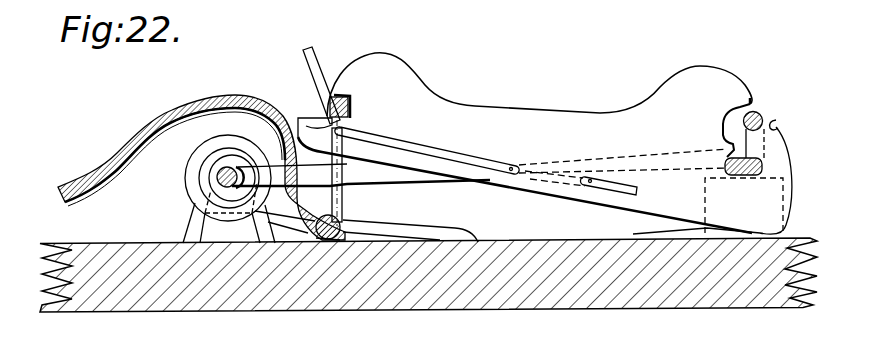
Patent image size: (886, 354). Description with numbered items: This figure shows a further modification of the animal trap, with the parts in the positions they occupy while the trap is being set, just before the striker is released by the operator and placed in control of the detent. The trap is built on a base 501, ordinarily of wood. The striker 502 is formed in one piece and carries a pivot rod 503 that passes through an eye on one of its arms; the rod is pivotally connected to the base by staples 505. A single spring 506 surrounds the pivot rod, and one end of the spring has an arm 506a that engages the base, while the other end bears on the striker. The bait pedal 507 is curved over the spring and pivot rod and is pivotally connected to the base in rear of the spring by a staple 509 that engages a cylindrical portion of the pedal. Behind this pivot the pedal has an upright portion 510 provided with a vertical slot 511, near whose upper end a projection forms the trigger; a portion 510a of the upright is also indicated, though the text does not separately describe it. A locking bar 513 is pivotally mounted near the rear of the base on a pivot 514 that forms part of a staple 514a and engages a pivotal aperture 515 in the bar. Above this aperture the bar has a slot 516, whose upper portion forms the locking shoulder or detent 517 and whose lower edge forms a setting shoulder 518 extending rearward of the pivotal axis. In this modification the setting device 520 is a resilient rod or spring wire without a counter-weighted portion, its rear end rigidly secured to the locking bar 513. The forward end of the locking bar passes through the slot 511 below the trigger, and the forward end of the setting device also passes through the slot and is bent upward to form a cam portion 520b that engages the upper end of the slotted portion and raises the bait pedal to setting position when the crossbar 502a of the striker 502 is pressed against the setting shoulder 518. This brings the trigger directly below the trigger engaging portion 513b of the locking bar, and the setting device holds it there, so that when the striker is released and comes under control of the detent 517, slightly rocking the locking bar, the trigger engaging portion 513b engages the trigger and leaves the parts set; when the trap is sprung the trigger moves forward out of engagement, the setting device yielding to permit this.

The base 501 is at (531, 306).
The striker 502 is at (377, 178).
The crossbar of the striker 502a is at (762, 113).
The pivot rod 503 is at (216, 177).
The staples 505 is at (193, 215).
The spring 506 is at (208, 143).
The arm of the spring 506a is at (446, 231).
The bait pedal 507 is at (108, 160).
The staple 509 is at (317, 244).
The upright portion 510 is at (342, 244).
The block 510a is at (331, 95).
The vertical slot 511 is at (343, 195).
The locking bar 513 is at (518, 112).
The trigger engaging portion 513b is at (346, 92).
The pivot 514 is at (761, 162).
The staple 514a is at (712, 183).
The pivotal aperture 515 is at (757, 170).
The slot 516 is at (722, 127).
The detent 517 is at (742, 84).
The setting shoulder 518 is at (774, 124).
The setting device 520 is at (418, 147).
The cam portion 520b is at (313, 50).